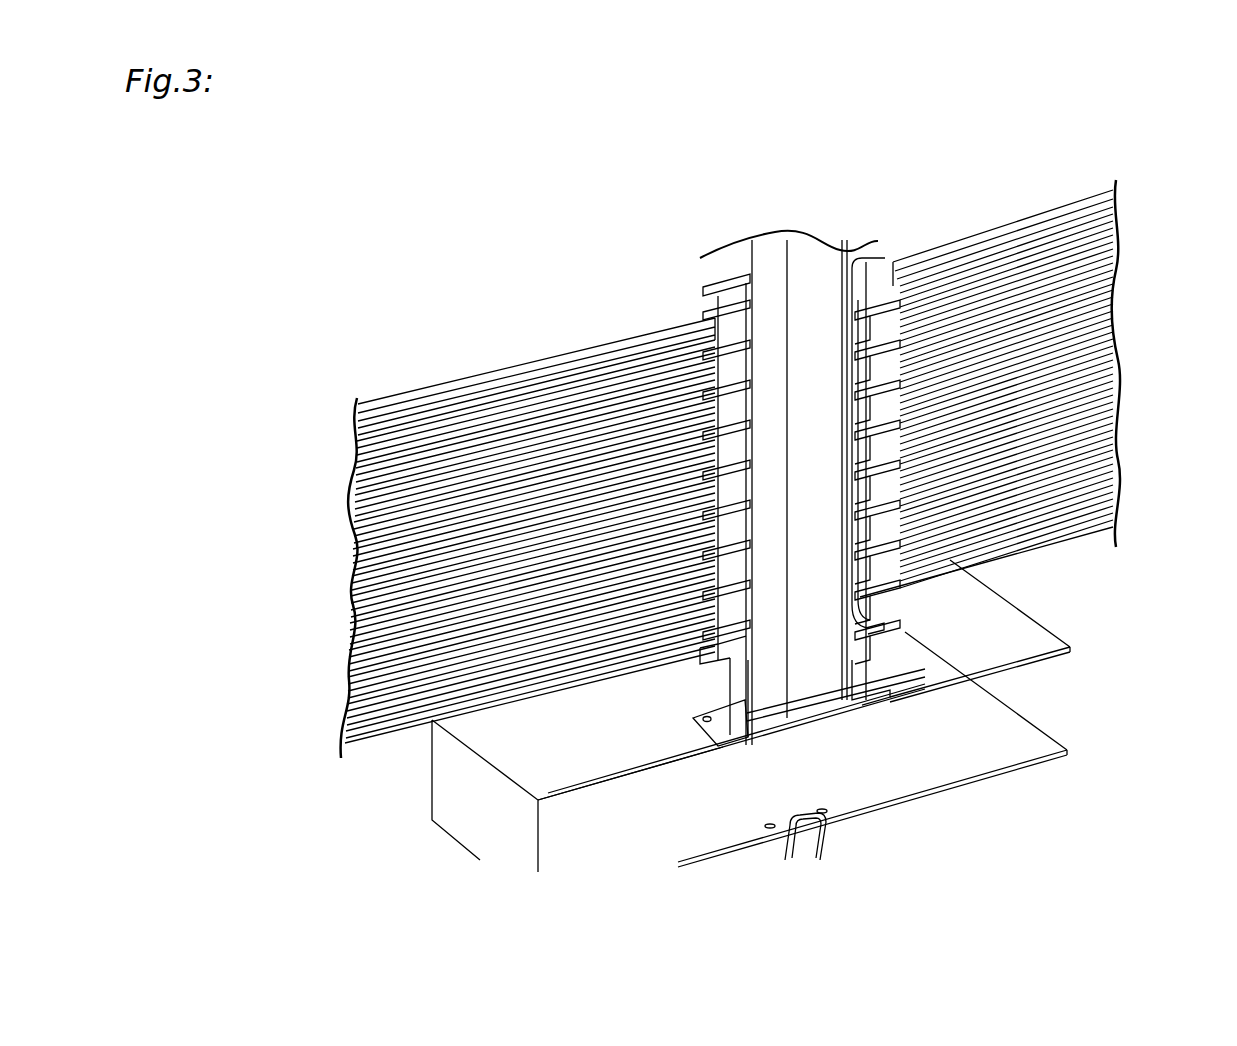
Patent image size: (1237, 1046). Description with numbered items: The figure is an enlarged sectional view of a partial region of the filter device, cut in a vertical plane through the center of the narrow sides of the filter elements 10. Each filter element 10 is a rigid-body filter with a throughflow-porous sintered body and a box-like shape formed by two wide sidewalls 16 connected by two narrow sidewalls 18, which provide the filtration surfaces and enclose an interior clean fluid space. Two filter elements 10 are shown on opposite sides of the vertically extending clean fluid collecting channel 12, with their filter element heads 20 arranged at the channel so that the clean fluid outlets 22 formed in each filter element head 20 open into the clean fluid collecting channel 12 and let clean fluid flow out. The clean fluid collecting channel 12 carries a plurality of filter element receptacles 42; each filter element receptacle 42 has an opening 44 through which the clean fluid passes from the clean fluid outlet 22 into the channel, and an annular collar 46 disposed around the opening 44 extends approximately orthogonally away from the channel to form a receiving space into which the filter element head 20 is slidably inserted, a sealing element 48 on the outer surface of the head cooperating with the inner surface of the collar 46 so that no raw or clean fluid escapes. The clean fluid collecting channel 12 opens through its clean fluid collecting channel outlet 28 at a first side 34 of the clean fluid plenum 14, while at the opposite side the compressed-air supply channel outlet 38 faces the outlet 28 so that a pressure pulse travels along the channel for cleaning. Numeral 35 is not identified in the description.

The filter element 10 is at (1136, 212).
The clean fluid collecting channel 12 is at (826, 206).
The clean fluid plenum 14 is at (1010, 768).
The wide sidewall 16 is at (388, 512).
The narrow sidewall 18 is at (478, 375).
The filter element head 20 is at (885, 600).
The clean fluid outlet 22 is at (868, 296).
The clean fluid collecting channel outlet 28 is at (855, 700).
The first side 34 is at (1010, 664).
The housing box 35 is at (670, 838).
The compressed-air supply channel outlet 38 is at (822, 822).
The filter element receptacle 42 is at (716, 272).
The opening 44 is at (800, 240).
The annular collar 46 is at (718, 670).
The sealing element 48 is at (878, 628).